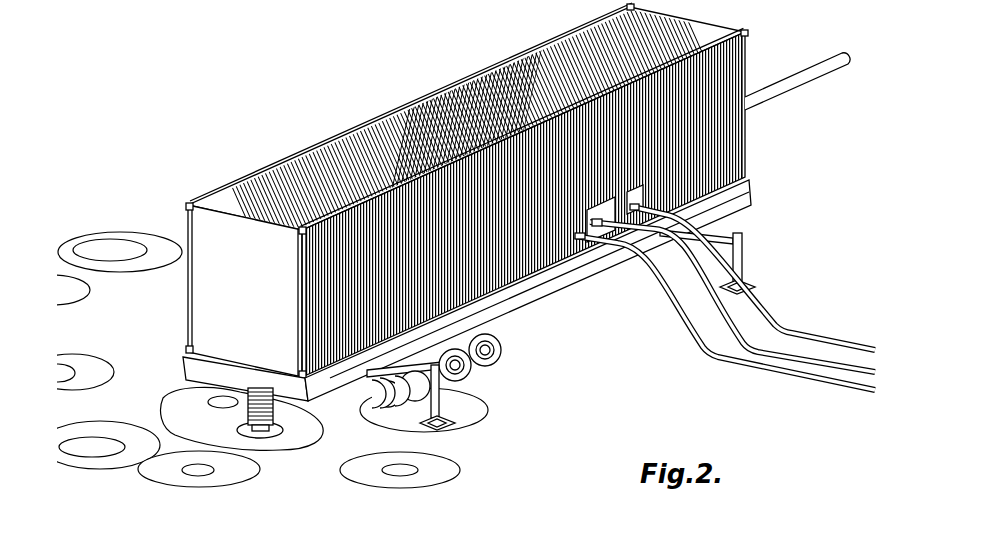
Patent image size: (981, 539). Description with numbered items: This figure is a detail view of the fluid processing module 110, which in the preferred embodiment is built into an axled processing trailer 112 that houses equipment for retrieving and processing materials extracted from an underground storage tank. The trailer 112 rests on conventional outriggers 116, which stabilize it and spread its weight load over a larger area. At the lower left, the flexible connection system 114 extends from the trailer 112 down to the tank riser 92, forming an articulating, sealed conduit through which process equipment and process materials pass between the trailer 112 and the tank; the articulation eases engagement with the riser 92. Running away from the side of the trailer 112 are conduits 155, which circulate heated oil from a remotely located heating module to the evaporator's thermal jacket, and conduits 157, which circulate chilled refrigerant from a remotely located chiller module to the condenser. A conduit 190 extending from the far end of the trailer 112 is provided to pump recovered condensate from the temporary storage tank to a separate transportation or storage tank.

The fluid processing module 110 is at (468, 190).
The processing trailer 112 is at (418, 105).
The flexible connection system 114 is at (290, 402).
The outriggers 116 is at (445, 392).
The tank riser 92 is at (268, 434).
The conduit 190 is at (782, 84).
The conduits 155 is at (668, 303).
The conduits 157 is at (710, 320).